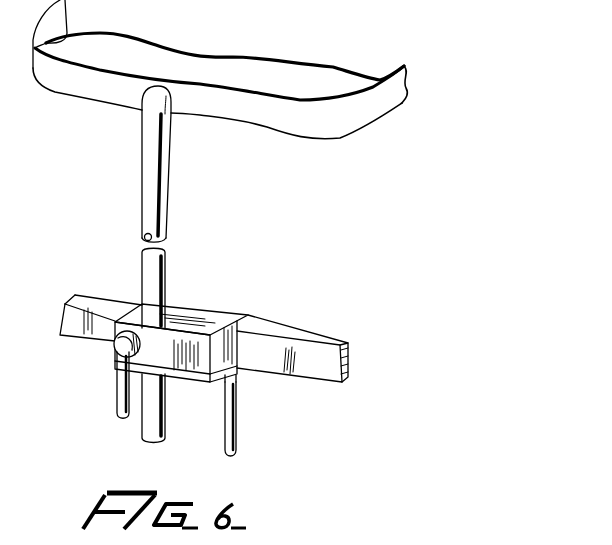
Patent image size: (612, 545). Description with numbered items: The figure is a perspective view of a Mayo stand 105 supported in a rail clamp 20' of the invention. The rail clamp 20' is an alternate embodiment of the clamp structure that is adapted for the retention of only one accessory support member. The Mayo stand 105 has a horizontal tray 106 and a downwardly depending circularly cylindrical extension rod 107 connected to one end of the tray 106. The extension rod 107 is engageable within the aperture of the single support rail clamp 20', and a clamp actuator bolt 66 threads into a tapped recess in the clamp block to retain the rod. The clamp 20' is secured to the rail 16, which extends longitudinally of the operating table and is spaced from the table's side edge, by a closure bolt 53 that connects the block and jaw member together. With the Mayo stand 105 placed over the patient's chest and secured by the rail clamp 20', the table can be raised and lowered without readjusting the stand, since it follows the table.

The horizontal tray 106 is at (302, 56).
The Mayo stand 105 is at (221, 132).
The extension rod 107 is at (165, 277).
The rail clamp 20' is at (194, 320).
The rail 16 is at (298, 332).
The clamp actuator bolt 66 is at (113, 354).
The clamp closure bolt 53 is at (237, 378).